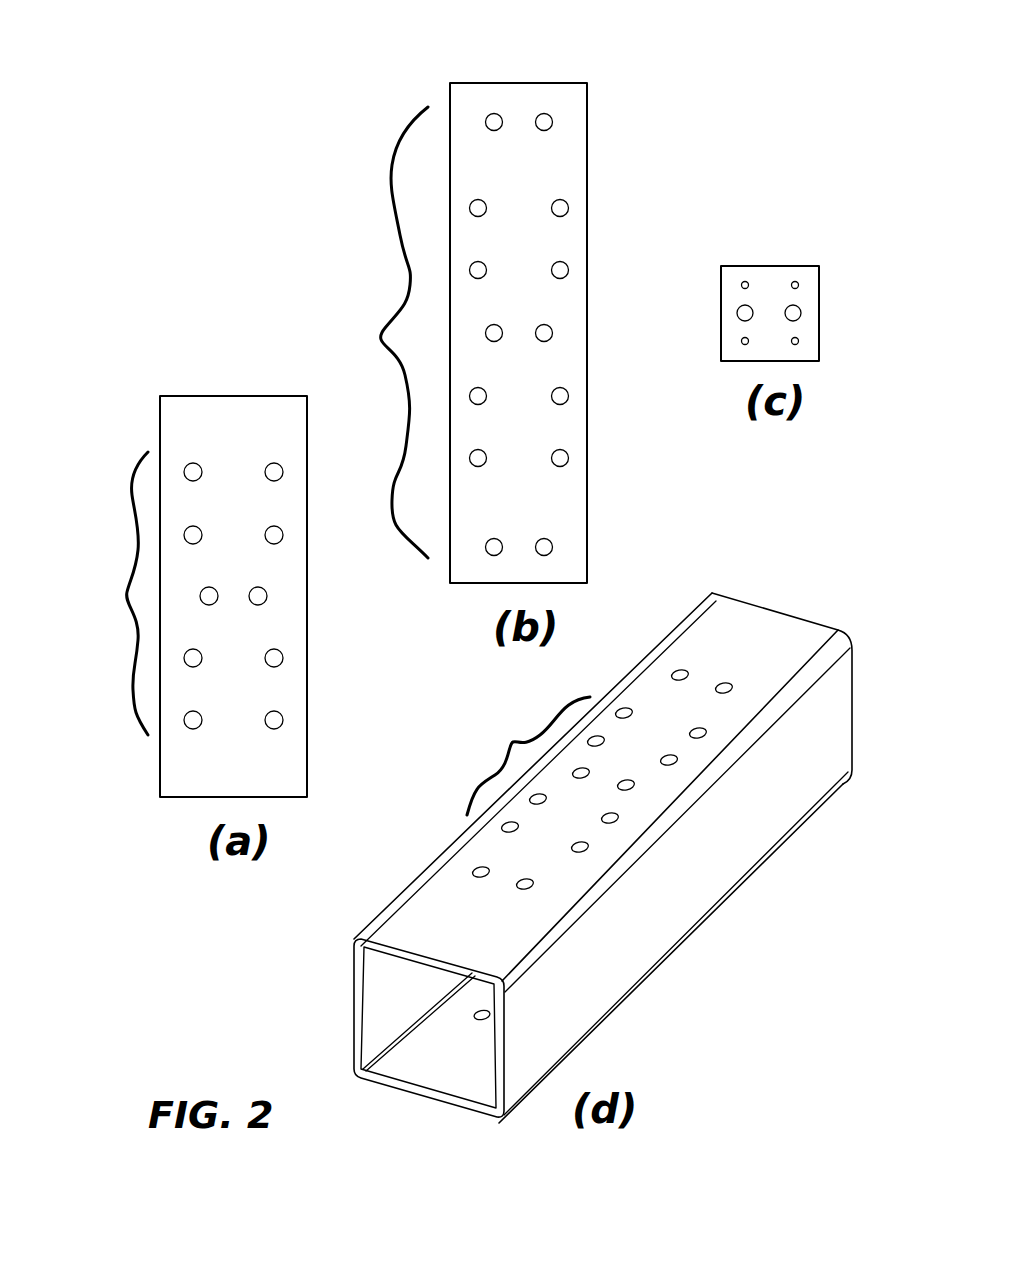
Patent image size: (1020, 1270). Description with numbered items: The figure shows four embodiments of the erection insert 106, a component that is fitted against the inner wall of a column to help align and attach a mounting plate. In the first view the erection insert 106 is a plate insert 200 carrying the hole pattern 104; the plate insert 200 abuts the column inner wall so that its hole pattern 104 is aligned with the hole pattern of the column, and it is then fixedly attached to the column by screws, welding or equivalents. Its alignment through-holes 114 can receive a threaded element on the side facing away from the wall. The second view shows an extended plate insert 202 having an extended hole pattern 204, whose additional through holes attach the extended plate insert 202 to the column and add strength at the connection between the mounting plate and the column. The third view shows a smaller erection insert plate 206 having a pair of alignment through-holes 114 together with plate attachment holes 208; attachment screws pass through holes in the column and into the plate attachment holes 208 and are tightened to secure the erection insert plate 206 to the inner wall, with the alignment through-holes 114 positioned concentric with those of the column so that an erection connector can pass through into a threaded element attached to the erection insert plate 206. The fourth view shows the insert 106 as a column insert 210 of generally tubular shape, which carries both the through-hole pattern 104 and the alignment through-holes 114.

The erection insert 106 is at (148, 93).
The hole pattern 104 is at (127, 592).
The plate insert 200 is at (187, 397).
The extended plate insert 202 is at (532, 83).
The extended hole pattern 204 is at (385, 328).
The erection insert plate 206 is at (728, 266).
The plate attachment holes 208 is at (795, 285).
The column insert 210 is at (438, 855).
The alignment through-holes 114 is at (262, 603).